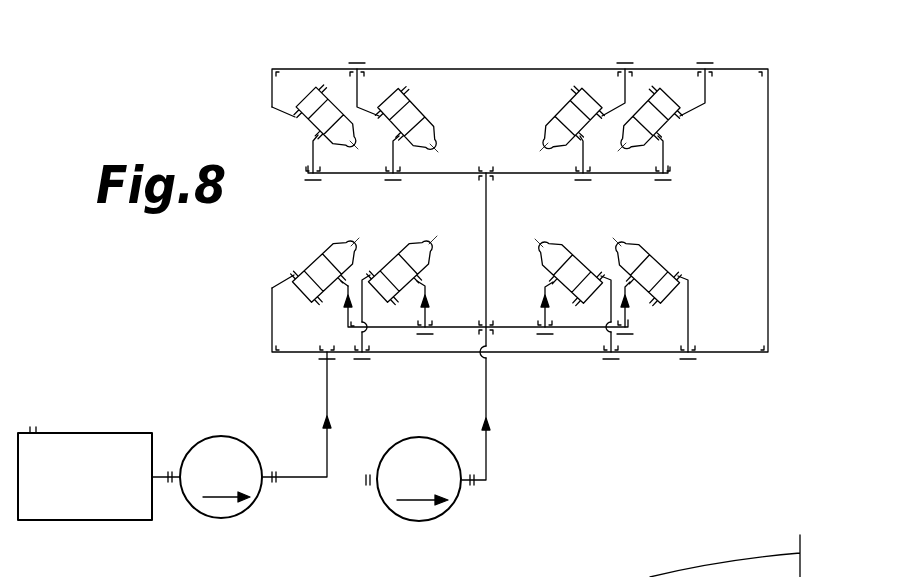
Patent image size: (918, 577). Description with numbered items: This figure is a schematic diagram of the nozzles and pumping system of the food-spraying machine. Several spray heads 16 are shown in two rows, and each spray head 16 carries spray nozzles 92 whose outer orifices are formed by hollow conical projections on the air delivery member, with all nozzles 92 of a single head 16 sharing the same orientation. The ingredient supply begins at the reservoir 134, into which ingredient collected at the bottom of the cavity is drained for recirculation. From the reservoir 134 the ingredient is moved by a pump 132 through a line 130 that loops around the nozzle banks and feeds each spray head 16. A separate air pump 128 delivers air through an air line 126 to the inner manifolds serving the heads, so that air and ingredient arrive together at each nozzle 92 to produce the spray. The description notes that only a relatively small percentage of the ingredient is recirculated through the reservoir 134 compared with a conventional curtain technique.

The spray head 16 is at (320, 92).
The spray nozzle 92 is at (352, 146).
The air line 126 is at (568, 329).
The air pump 128 is at (413, 522).
The ingredient line 130 is at (440, 69).
The ingredient pump 132 is at (222, 513).
The reservoir 134 is at (83, 512).